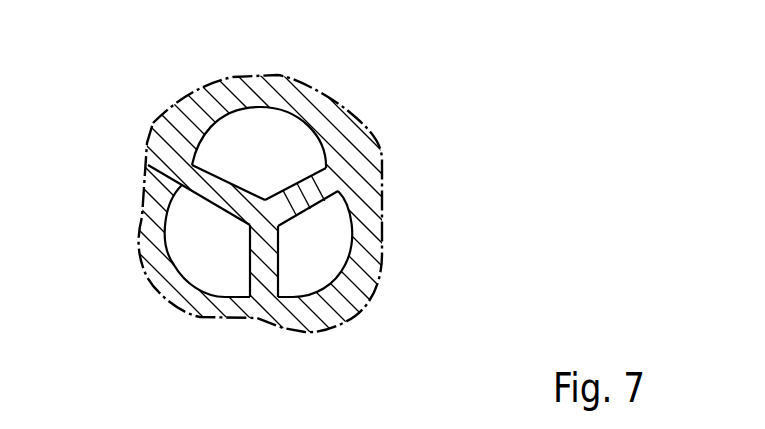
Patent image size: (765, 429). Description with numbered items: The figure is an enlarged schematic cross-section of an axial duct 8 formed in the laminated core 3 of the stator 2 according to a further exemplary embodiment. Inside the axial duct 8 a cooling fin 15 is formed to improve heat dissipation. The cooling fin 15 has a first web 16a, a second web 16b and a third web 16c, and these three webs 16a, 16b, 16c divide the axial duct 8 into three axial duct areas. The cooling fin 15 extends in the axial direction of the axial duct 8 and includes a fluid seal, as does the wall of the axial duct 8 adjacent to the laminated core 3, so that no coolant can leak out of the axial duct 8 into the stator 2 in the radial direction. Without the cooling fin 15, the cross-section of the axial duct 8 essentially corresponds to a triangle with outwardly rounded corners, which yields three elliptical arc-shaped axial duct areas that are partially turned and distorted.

The stator 2 is at (403, 95).
The laminated core 3 is at (345, 145).
The axial duct 8 is at (243, 140).
The cooling fin 15 is at (265, 174).
The first web 16a is at (230, 193).
The second web 16b is at (270, 210).
The third web 16c is at (263, 273).